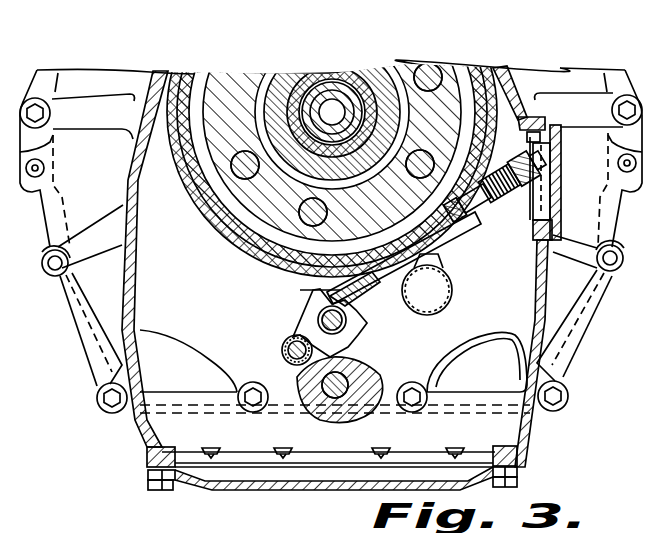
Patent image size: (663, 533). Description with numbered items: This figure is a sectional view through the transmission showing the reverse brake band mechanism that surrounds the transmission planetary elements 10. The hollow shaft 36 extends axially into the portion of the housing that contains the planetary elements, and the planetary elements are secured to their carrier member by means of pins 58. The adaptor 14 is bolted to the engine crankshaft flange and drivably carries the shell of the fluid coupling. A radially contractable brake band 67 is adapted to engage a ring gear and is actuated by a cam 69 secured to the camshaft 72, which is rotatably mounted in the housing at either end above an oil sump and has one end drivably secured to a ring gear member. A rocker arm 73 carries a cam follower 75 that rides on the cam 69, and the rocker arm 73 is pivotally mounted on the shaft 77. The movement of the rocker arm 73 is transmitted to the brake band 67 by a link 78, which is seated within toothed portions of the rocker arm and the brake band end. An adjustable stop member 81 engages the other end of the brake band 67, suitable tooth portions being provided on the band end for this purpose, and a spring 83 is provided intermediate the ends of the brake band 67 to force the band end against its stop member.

The transmission planetary elements 10 is at (398, 50).
The adaptor 14 is at (548, 375).
The hollow shaft 36 is at (347, 72).
The pins 58 is at (428, 66).
The brake band 67 is at (503, 64).
The cam 69 is at (358, 412).
The camshaft 72 is at (312, 405).
The rocker arm 73 is at (362, 326).
The cam follower 75 is at (281, 349).
The shaft 77 is at (322, 318).
The link 78 is at (340, 298).
The adjustable stop member 81 is at (480, 222).
The spring 83 is at (455, 283).